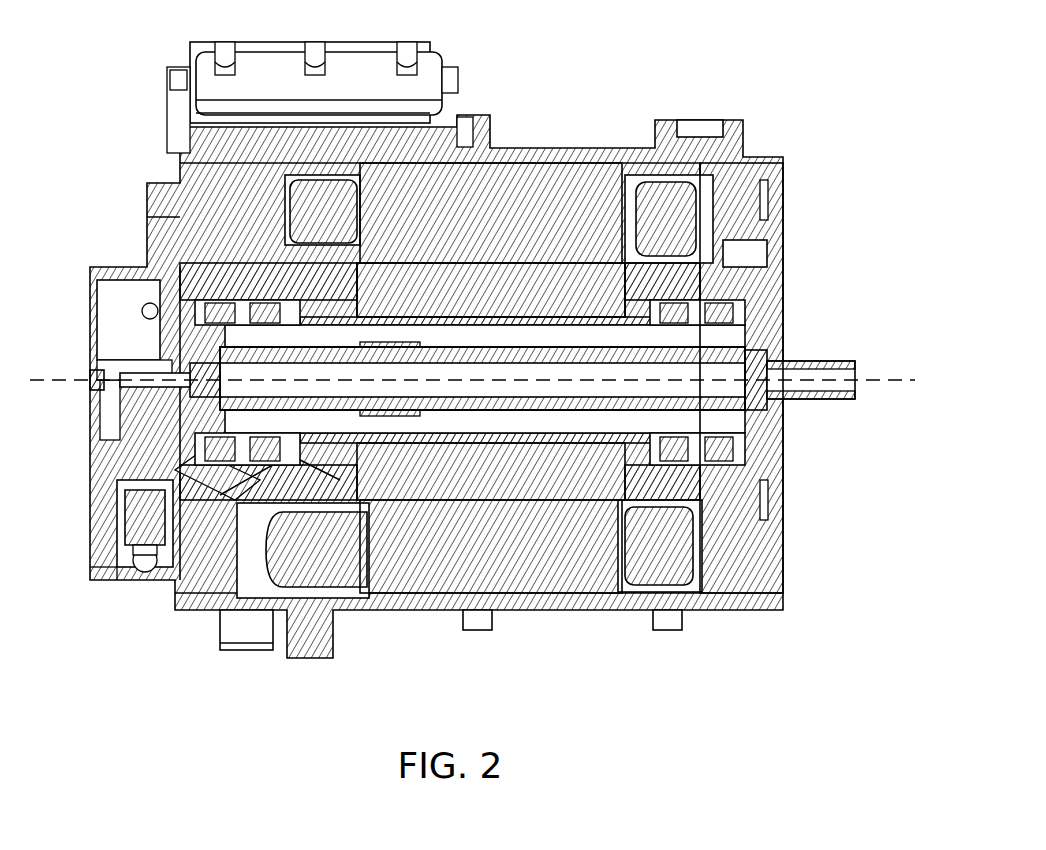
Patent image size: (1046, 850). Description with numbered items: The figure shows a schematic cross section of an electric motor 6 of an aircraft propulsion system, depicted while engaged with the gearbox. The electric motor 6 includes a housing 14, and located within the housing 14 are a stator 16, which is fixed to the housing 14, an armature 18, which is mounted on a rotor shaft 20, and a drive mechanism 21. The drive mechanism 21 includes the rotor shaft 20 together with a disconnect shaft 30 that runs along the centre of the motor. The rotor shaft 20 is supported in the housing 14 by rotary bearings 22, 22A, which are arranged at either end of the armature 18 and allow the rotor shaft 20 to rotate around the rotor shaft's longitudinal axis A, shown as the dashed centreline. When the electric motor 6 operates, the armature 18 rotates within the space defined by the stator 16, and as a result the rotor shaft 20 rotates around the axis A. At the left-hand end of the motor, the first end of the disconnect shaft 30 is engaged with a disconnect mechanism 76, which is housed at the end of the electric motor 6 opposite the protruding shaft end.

The electric motor 6 is at (460, 352).
The housing 14 is at (747, 147).
The stator 16 is at (508, 202).
The armature 18 is at (547, 292).
The rotor shaft 20 is at (436, 350).
The drive mechanism 21 is at (420, 290).
The rotary bearing 22 is at (315, 318).
The rotary bearing 22A is at (705, 305).
The disconnect shaft 30 is at (490, 410).
The disconnect mechanism 76 is at (104, 456).
The longitudinal axis A is at (867, 380).